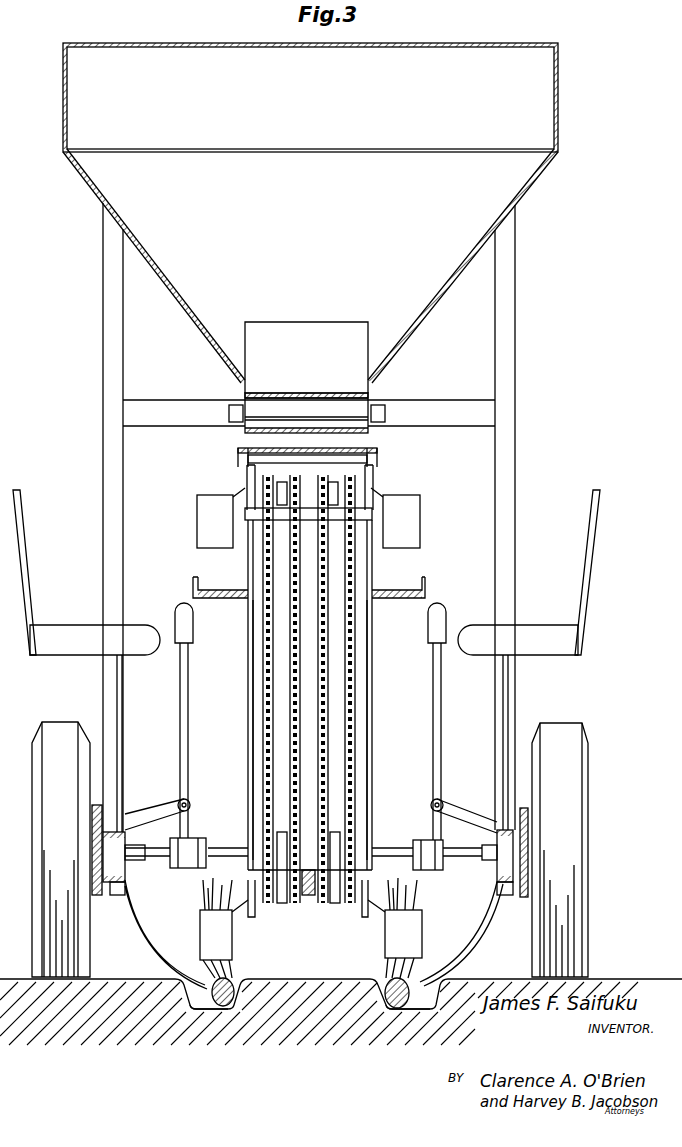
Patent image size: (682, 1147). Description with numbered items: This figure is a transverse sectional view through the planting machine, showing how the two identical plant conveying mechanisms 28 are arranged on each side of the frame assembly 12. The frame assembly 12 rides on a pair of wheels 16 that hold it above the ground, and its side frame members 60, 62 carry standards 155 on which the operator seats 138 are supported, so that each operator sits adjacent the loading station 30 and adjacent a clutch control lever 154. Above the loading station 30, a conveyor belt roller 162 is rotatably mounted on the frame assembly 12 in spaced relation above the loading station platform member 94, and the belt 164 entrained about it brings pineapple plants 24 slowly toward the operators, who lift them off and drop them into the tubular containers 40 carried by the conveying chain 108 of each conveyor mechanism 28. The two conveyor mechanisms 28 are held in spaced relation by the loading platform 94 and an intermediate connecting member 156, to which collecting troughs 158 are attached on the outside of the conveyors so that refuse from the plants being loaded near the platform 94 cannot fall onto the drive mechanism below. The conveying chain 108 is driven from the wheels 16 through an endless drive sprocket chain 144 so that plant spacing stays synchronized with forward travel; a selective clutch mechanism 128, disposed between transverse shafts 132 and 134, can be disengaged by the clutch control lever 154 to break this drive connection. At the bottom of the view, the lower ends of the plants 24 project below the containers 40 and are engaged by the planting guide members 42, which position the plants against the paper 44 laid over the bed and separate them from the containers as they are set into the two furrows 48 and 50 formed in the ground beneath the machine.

The frame assembly 12 is at (518, 413).
The wheels 16 is at (563, 743).
The pineapple plants 24 is at (223, 948).
The plant conveying mechanism 28 is at (246, 750).
The loading station 30 is at (243, 447).
The containers 40 is at (412, 520).
The planting guide member 42 is at (148, 935).
The paper 44 is at (307, 978).
The furrow bed 48 is at (205, 1010).
The furrow bed 50 is at (400, 1012).
The side frame member 60 is at (108, 882).
The side frame member 62 is at (510, 883).
The loading station platform member 94 is at (358, 449).
The conveying chain 108 is at (352, 690).
The clutch mechanism 128 is at (423, 830).
The shaft 132 is at (467, 856).
The shaft 134 is at (532, 192).
The seats 138 is at (583, 613).
The endless drive sprocket chain 144 is at (322, 647).
The clutch control lever 154 is at (182, 723).
The standards 155 is at (110, 695).
The intermediate connecting member 156 is at (310, 515).
The collecting troughs 158 is at (405, 593).
The conveyor belt roller 162 is at (357, 408).
The belt 164 is at (317, 388).